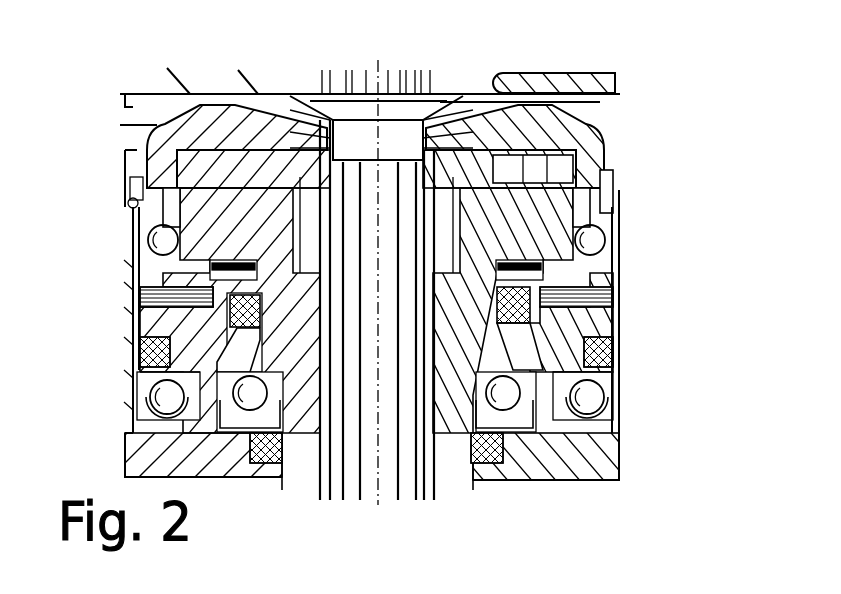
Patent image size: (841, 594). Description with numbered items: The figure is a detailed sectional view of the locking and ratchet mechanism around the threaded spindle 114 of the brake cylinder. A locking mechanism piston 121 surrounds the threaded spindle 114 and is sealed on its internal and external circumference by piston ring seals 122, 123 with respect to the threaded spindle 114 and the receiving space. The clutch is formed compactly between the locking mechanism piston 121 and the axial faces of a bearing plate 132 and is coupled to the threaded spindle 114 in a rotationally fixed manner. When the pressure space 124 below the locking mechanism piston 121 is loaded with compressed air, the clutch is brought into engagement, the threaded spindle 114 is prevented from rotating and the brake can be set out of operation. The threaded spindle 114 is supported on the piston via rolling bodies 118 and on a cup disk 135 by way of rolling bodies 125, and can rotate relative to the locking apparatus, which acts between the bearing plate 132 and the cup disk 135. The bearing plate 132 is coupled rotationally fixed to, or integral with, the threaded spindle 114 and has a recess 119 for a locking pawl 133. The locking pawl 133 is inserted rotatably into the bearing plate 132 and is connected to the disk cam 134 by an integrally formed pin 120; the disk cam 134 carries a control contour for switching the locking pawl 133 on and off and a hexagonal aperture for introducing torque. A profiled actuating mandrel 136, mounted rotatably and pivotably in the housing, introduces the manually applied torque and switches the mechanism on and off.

The actuating mandrel 136 is at (410, 136).
The cup disk 135 is at (560, 128).
The pin 120 is at (489, 176).
The disk cam 134 is at (603, 175).
The locking pawl 133 is at (598, 226).
The rolling bodies 125 is at (592, 250).
The recess 119 is at (613, 265).
The bearing plate 132 is at (616, 283).
The locking mechanism piston 121 is at (617, 333).
The threaded spindle 114 is at (612, 380).
The rolling bodies 118 is at (505, 400).
The piston ring seal 122 is at (484, 368).
The pressure space 124 is at (223, 352).
The piston ring seal 123 is at (133, 356).